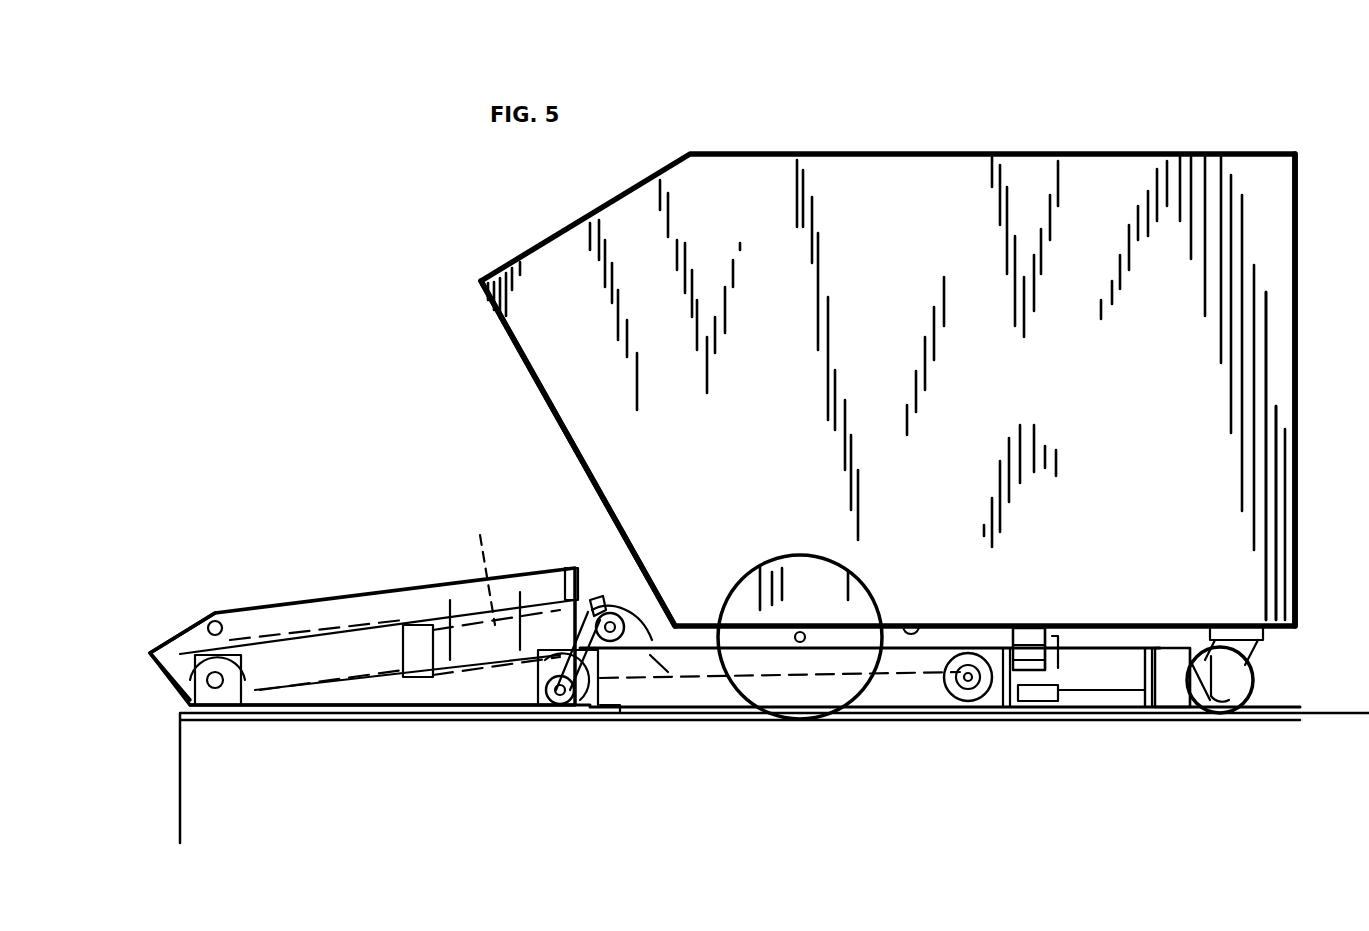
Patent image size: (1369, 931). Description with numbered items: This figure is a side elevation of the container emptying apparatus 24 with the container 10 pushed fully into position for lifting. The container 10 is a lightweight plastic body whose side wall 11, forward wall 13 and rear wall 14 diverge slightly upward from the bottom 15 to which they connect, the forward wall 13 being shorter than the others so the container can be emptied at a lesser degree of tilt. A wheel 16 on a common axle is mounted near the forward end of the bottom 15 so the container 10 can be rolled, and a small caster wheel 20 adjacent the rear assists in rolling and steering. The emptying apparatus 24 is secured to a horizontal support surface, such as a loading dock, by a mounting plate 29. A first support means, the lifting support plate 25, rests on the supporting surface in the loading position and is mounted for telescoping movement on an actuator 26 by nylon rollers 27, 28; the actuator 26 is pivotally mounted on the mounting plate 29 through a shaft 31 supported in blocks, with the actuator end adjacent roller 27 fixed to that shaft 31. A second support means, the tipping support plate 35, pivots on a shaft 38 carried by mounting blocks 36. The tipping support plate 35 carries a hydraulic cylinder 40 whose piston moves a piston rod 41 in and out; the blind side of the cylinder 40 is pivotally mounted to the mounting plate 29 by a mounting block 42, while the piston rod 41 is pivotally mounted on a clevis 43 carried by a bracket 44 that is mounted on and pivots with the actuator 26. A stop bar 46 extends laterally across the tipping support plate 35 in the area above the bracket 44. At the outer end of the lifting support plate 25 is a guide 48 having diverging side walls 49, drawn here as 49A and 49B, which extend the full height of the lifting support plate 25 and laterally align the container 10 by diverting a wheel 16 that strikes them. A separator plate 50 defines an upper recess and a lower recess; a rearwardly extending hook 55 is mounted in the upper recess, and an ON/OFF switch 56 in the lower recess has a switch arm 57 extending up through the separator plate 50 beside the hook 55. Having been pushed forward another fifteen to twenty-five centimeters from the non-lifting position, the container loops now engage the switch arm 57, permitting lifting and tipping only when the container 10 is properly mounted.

The container 10 is at (781, 124).
The side wall 11 is at (1250, 372).
The forward wall 13 is at (524, 360).
The rear wall 14 is at (1296, 266).
The bottom 15 is at (904, 626).
The wheel 16 is at (770, 572).
The caster wheel 20 is at (1255, 678).
The emptying apparatus 24 is at (503, 822).
The lifting support plate 25 is at (997, 708).
The actuator 26 is at (705, 722).
The nylon roller 27 is at (592, 720).
The nylon roller 28 is at (968, 703).
The mounting plate 29 is at (385, 720).
The shaft 31 is at (536, 708).
The tipping support plate 35 is at (447, 586).
The mounting block 36 is at (176, 646).
The shaft 38 is at (216, 622).
The cylinder 40 is at (303, 622).
The piston rod 41 is at (485, 586).
The mounting block 42 is at (172, 716).
The clevis 43 is at (596, 604).
The bracket 44 is at (636, 616).
The stop bar 46 is at (571, 568).
The guide 48 is at (1198, 704).
The diverging side walls 49 is at (1143, 717).
The latch plate 49A is at (1172, 705).
The latch rod 49B is at (1092, 703).
The separator plate 50 is at (1113, 626).
The hook 55 is at (1010, 630).
The ON/OFF switch 56 is at (1078, 692).
The switch arm 57 is at (1062, 627).